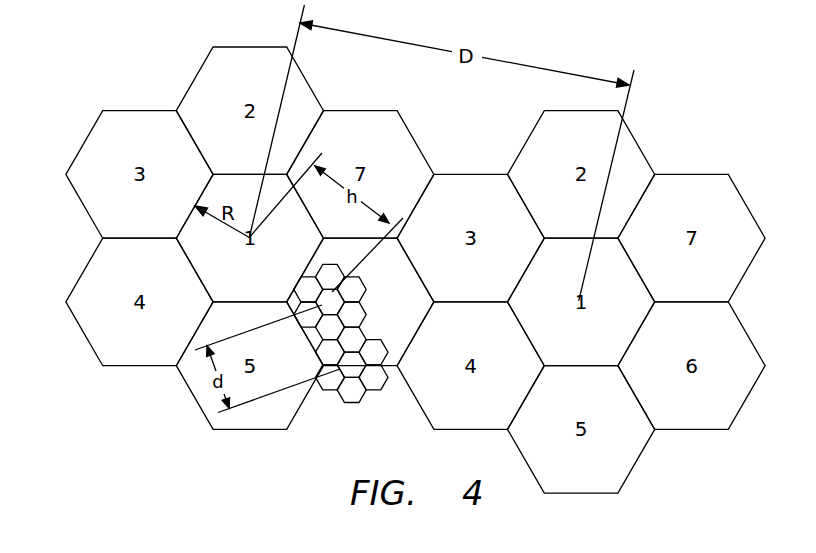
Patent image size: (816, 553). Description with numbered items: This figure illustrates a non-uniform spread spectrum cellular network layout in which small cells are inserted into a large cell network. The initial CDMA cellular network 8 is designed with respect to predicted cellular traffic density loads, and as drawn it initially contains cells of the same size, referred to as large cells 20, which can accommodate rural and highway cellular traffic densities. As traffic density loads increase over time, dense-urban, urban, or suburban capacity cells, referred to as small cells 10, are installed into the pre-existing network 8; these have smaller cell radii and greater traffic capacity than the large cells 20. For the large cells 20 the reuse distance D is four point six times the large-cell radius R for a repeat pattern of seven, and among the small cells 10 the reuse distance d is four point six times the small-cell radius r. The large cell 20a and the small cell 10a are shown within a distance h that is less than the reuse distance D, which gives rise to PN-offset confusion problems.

The CDMA cellular network 8 is at (713, 113).
The small cell 10 is at (331, 392).
The small cell 10a is at (340, 294).
The large cell 20 is at (745, 212).
The large cell 20a is at (195, 245).